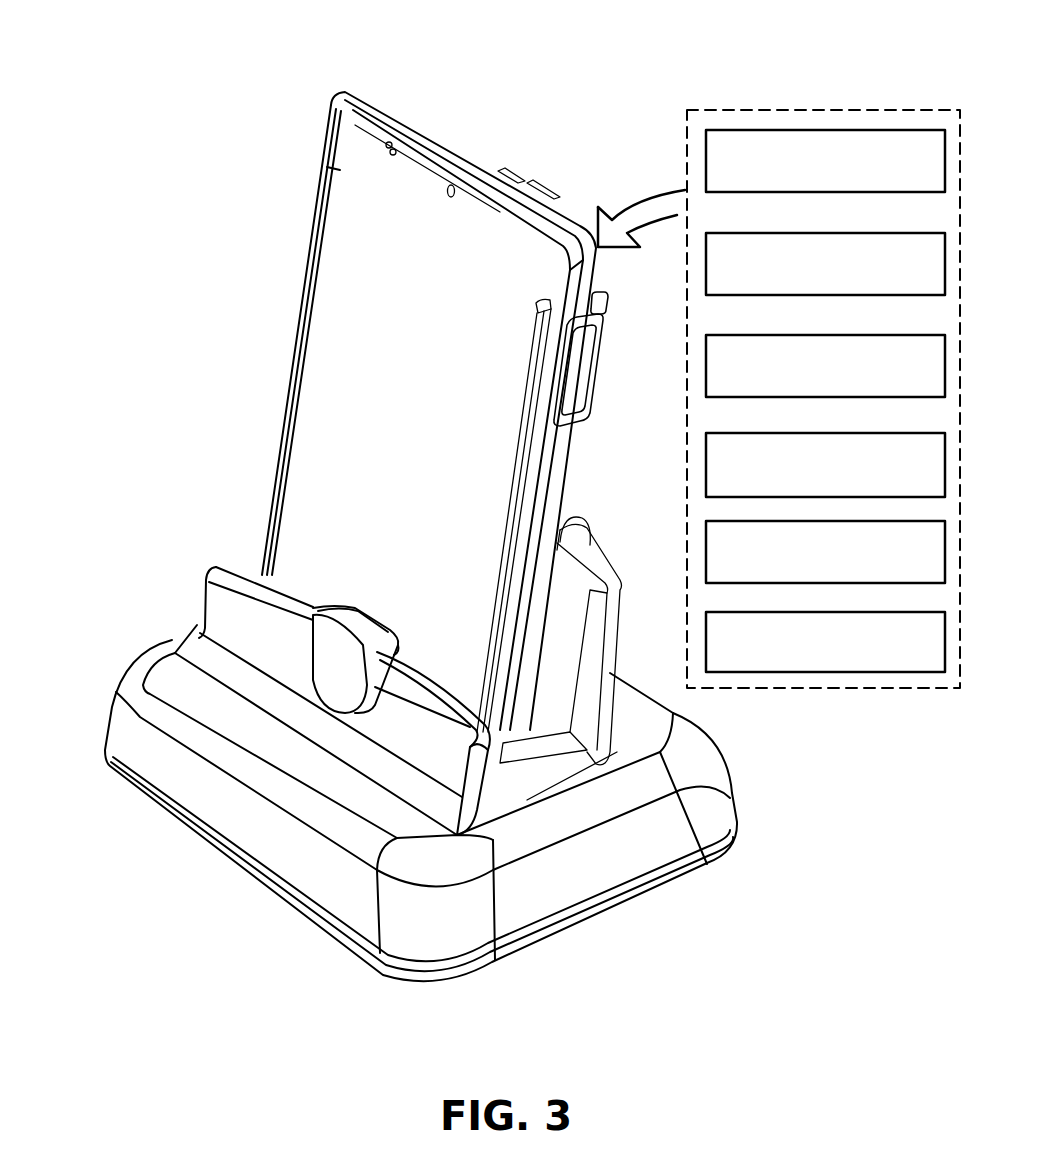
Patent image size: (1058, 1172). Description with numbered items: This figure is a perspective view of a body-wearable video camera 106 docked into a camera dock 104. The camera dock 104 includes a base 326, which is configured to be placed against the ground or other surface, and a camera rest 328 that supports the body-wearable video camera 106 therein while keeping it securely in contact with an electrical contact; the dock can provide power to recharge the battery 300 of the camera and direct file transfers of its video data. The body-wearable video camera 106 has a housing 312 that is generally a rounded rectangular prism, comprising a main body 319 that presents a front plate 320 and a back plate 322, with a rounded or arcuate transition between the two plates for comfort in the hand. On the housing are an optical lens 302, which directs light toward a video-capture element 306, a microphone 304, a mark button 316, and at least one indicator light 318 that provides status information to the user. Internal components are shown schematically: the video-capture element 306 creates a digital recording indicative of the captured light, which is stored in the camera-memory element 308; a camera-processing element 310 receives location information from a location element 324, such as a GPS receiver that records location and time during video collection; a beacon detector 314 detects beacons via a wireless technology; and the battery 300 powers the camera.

The camera dock 104 is at (416, 742).
The body-wearable video camera 106 is at (524, 389).
The battery 300 is at (740, 124).
The optical lens 302 is at (449, 180).
The microphone 304 is at (389, 134).
The video-capture element 306 is at (704, 263).
The camera-memory element 308 is at (704, 366).
The camera-processing element 310 is at (704, 450).
The housing 312 is at (330, 140).
The beacon detector 314 is at (704, 553).
The mark button 316 is at (582, 380).
The indicator light 318 is at (536, 185).
The main body 319 is at (290, 222).
The front plate 320 is at (345, 295).
The back plate 322 is at (590, 190).
The location element 324 is at (852, 676).
The base 326 is at (598, 870).
The camera rest 328 is at (200, 564).